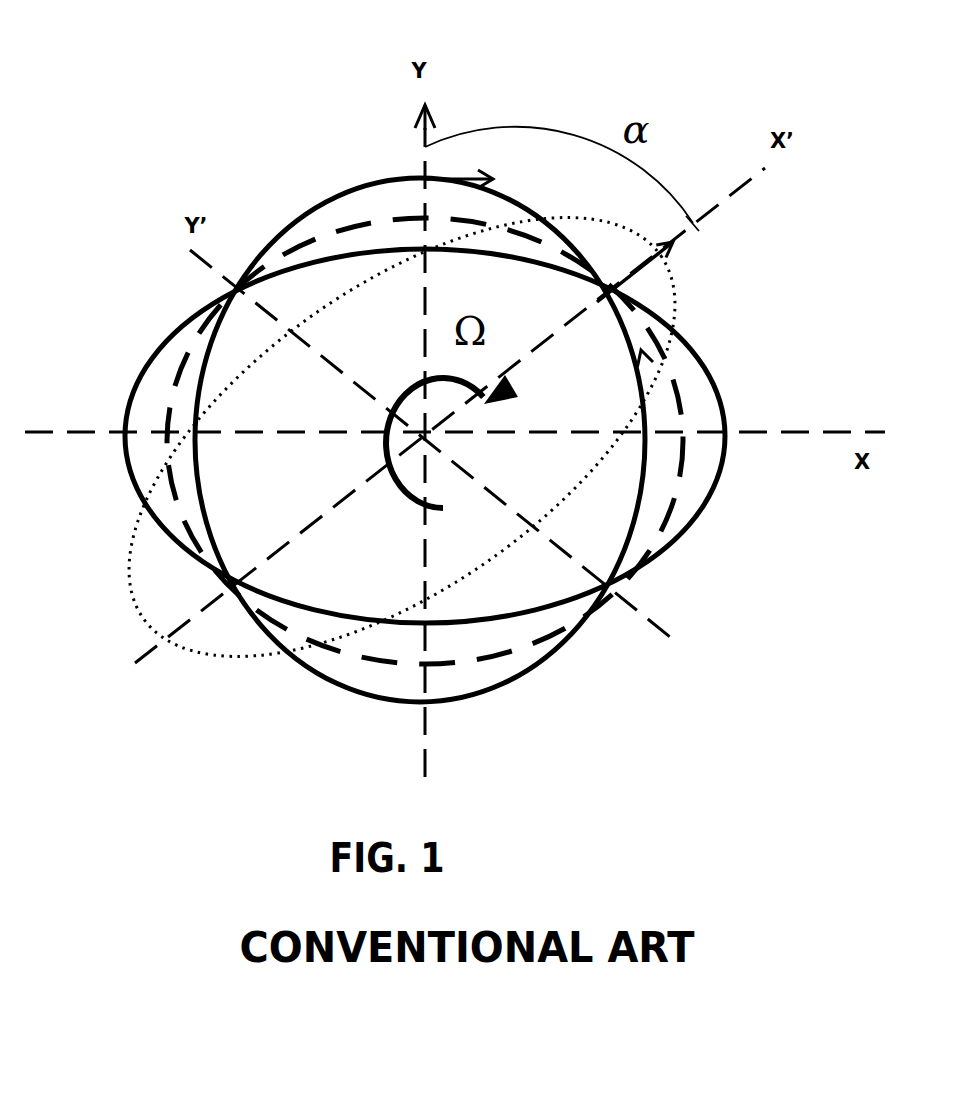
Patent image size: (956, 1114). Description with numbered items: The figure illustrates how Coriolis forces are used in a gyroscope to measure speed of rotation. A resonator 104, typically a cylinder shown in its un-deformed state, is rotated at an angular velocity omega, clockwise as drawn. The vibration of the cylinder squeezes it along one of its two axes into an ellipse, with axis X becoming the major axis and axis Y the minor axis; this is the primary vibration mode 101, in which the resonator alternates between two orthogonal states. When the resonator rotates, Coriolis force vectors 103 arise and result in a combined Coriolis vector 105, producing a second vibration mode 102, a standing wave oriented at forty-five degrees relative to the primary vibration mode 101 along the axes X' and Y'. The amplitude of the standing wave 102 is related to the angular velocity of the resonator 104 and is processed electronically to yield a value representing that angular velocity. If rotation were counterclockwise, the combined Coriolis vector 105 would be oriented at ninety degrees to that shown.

The primary vibration mode 101 is at (404, 412).
The second vibration mode 102 is at (677, 283).
The Coriolis force vectors 103 is at (539, 192).
The resonator 104 is at (682, 400).
The combined Coriolis vector 105 is at (673, 242).